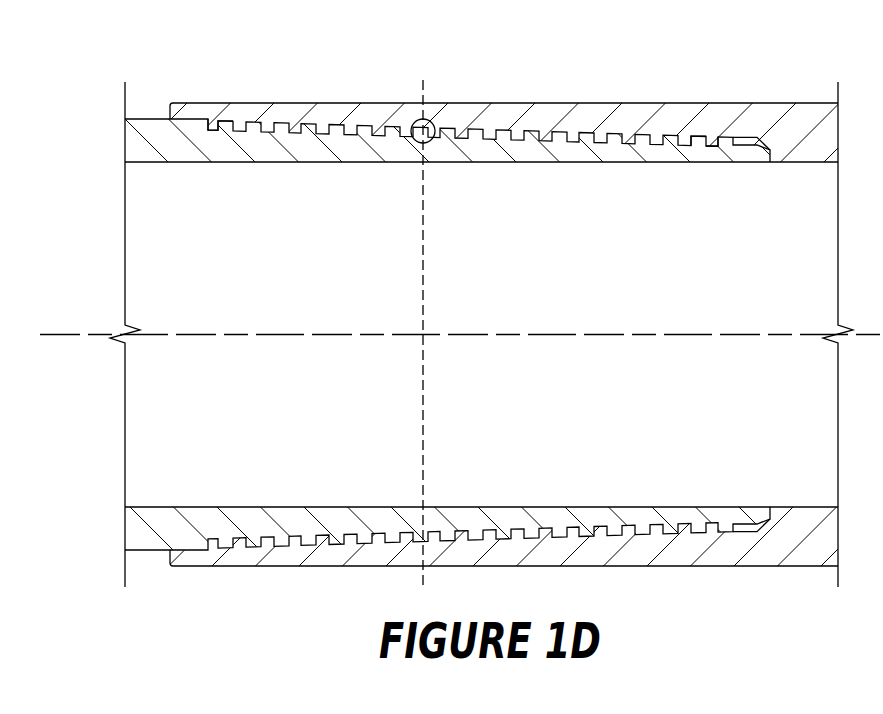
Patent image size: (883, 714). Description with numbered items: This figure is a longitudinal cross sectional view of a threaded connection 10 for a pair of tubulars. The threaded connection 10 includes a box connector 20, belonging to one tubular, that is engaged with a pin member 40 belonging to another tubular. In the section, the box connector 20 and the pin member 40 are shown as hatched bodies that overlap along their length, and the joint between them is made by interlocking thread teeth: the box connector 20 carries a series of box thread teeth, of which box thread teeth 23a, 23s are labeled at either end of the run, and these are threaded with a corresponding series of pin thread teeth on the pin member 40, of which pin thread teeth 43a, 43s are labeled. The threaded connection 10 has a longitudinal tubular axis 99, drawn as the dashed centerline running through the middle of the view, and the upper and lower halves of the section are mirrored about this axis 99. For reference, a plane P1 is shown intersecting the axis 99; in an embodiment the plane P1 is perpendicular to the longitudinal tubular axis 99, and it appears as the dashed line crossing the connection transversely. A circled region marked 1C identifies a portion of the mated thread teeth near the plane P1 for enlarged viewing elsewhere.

The threaded connection 10 is at (146, 47).
The box connector 20 is at (797, 103).
The pin member 40 is at (392, 163).
The pin thread tooth 43s is at (228, 122).
The pin thread tooth 43a is at (720, 137).
The box thread tooth 23a is at (218, 131).
The box thread tooth 23s is at (713, 147).
The detail view circle 1C is at (420, 119).
The plane P1 is at (426, 250).
The longitudinal tubular axis 99 is at (601, 334).